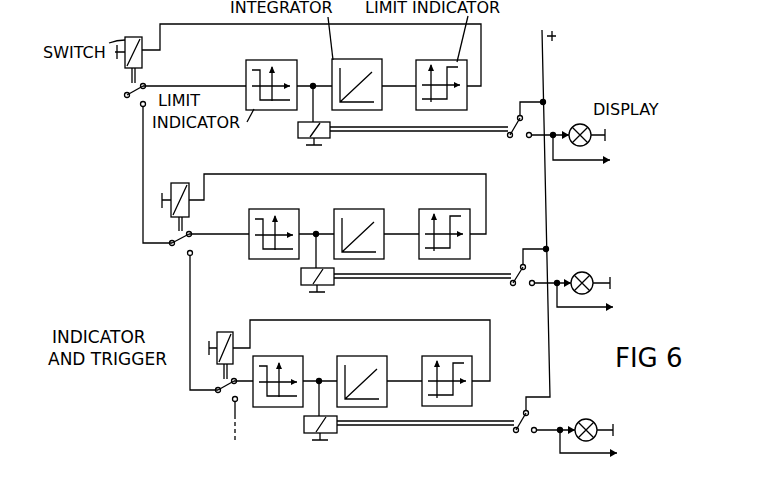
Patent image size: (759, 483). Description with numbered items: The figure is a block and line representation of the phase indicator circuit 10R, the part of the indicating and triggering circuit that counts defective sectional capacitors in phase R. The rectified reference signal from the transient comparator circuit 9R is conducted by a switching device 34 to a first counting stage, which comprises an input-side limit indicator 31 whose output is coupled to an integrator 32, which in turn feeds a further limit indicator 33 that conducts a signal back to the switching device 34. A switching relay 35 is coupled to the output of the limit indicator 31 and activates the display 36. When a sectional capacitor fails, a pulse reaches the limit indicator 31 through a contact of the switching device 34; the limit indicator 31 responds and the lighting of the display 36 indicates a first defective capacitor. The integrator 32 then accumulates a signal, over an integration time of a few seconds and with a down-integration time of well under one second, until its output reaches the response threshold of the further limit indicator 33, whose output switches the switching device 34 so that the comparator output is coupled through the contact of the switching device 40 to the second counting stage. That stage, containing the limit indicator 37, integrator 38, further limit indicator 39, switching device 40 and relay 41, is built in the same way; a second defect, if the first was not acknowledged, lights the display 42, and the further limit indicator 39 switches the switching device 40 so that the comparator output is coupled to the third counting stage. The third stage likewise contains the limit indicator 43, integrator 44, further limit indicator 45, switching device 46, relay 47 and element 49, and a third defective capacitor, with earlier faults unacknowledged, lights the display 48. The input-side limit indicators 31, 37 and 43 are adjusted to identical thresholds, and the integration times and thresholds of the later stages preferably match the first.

The comparator circuit 9R is at (124, 96).
The phase indicator circuit 10R is at (155, 341).
The input-side limit indicator 31 is at (249, 59).
The integrator 32 is at (333, 58).
The further limit indicator 33 is at (418, 59).
The switching device 34 is at (142, 60).
The switching relay 35 is at (298, 129).
The display 36 is at (572, 128).
The limit indicator 37 is at (283, 209).
The integrator 38 is at (368, 209).
The further limit indicator 39 is at (449, 209).
The switching device 40 is at (189, 207).
The switching relay 41 is at (301, 277).
The display 42 is at (579, 273).
The limit indicator 43 is at (277, 356).
The integrator 44 is at (341, 356).
The further limit indicator 45 is at (456, 356).
The switching device 46 is at (224, 332).
The switching relay 47 is at (304, 427).
The display 48 is at (583, 419).
The third counting stage element 49 is at (232, 414).